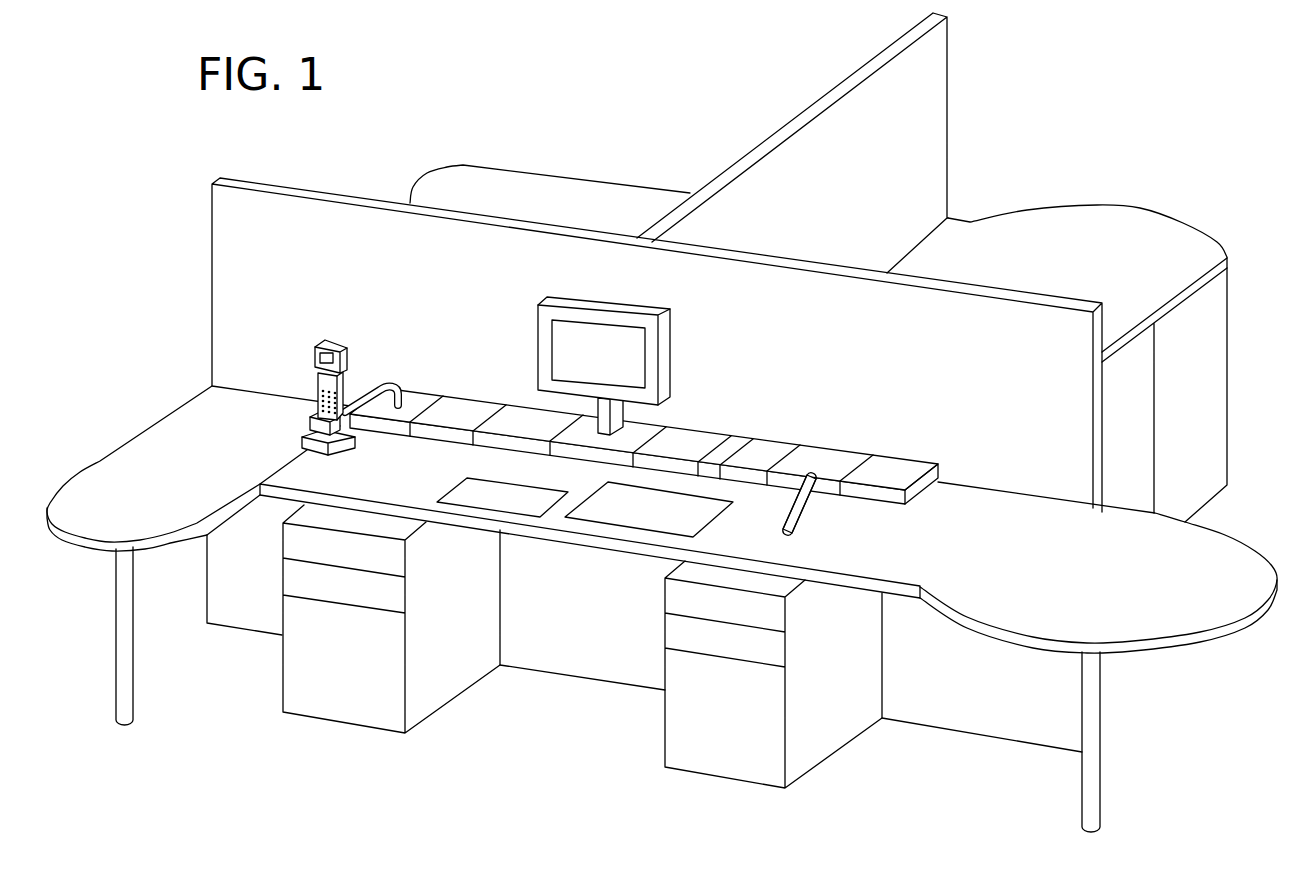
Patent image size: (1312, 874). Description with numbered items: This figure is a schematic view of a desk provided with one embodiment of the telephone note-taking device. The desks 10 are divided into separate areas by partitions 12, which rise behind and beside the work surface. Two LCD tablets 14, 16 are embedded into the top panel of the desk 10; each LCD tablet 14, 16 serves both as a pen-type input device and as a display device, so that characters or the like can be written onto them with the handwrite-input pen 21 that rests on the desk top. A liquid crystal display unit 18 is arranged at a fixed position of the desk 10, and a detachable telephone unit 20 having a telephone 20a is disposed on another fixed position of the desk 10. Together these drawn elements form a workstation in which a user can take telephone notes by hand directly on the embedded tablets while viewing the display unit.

The desk 10 is at (640, 183).
The partition 12 is at (933, 125).
The LCD tablet 14 is at (463, 495).
The LCD tablet 16 is at (647, 515).
The liquid crystal display unit 18 is at (543, 360).
The detachable telephone unit 20 is at (415, 386).
The telephone 20a is at (315, 354).
The handwrite-input pen 21 is at (797, 518).